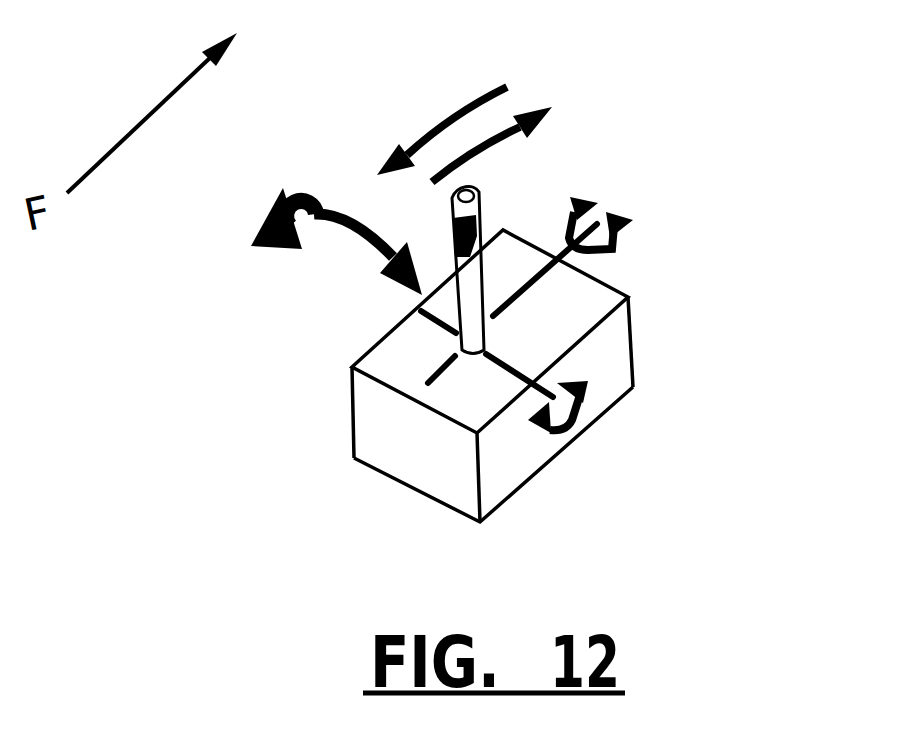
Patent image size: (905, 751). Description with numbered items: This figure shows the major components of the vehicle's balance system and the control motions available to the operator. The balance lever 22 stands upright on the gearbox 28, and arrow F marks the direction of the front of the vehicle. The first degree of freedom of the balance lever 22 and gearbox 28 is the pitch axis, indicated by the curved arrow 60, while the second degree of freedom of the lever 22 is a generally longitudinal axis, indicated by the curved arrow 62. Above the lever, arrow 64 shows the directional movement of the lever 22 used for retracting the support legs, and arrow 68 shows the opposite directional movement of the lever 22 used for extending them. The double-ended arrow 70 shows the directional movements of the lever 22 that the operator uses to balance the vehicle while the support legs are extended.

The balance lever 22 is at (467, 307).
The gearbox 28 is at (442, 468).
The arrow 60 is at (565, 440).
The arrow 62 is at (625, 219).
The arrow 64 is at (487, 147).
The arrow 68 is at (437, 97).
The double-ended arrow 70 is at (363, 237).